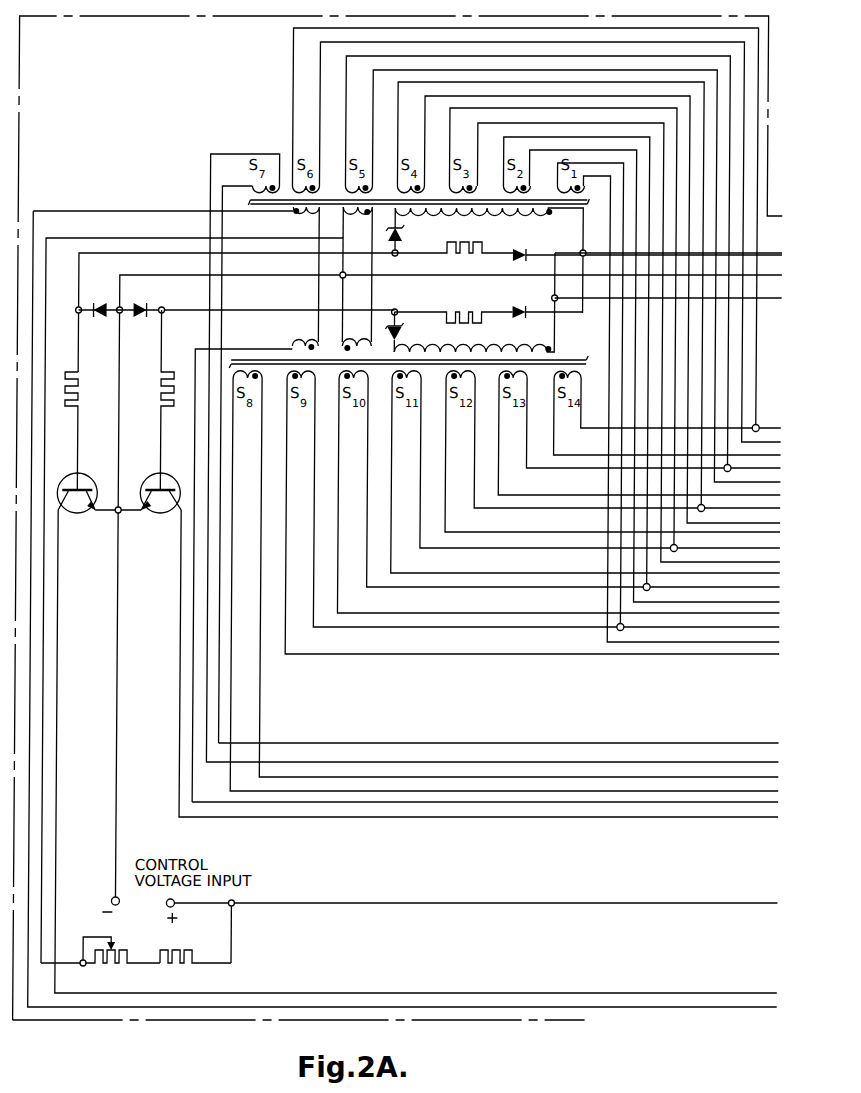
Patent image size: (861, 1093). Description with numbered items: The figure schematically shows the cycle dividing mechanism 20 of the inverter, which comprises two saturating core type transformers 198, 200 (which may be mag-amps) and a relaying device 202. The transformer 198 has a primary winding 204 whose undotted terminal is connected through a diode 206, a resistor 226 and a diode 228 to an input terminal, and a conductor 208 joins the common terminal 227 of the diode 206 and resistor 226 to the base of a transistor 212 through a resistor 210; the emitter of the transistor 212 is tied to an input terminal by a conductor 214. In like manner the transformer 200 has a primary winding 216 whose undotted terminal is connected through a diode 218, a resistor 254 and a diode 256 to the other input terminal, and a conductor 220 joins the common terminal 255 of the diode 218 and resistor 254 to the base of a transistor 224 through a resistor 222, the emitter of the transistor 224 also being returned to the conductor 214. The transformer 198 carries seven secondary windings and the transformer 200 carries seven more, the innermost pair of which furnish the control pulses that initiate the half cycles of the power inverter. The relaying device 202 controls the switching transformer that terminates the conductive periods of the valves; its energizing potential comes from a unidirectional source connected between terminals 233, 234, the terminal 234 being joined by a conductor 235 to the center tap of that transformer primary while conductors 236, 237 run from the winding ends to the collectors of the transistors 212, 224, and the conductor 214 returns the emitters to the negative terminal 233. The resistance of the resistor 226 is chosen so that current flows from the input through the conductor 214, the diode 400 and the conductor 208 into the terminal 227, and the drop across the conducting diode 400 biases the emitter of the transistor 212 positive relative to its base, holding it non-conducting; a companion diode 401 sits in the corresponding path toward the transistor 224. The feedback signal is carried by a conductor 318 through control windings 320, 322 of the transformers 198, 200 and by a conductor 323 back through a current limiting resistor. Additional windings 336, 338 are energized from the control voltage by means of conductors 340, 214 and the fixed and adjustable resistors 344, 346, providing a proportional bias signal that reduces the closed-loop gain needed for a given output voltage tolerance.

The cycle dividing mechanism 20 is at (530, 1022).
The saturating core type transformer 198 is at (249, 205).
The saturating core type transformer 200 is at (232, 359).
The relaying device 202 is at (156, 450).
The primary winding 204 is at (478, 213).
The diode 206 is at (403, 236).
The conductor 208 is at (80, 272).
The resistor 210 is at (81, 381).
The transistor 212 is at (88, 474).
The conductor 214 is at (121, 381).
The primary winding 216 is at (496, 350).
The diode 218 is at (403, 334).
The conductor 220 is at (180, 303).
The resistor 222 is at (164, 370).
The transistor 224 is at (155, 512).
The resistor 226 is at (470, 255).
The common terminal 227 is at (396, 257).
The diode 228 is at (528, 255).
The terminal 233 is at (124, 905).
The terminal 234 is at (178, 907).
The conductor 235 is at (448, 903).
The conductor 236 is at (334, 993).
The conductor 237 is at (539, 818).
The resistor 254 is at (460, 312).
The common terminal 255 is at (395, 310).
The diode 256 is at (524, 306).
The conductor 318 is at (462, 1007).
The control winding 320 is at (301, 214).
The control winding 322 is at (300, 347).
The conductor 323 is at (420, 806).
The additional winding 336 is at (347, 220).
The additional winding 338 is at (350, 346).
The conductor 340 is at (94, 238).
The fixed resistor 344 is at (185, 964).
The adjustable resistor 346 is at (116, 966).
The diode 400 is at (100, 316).
The diode 401 is at (140, 316).